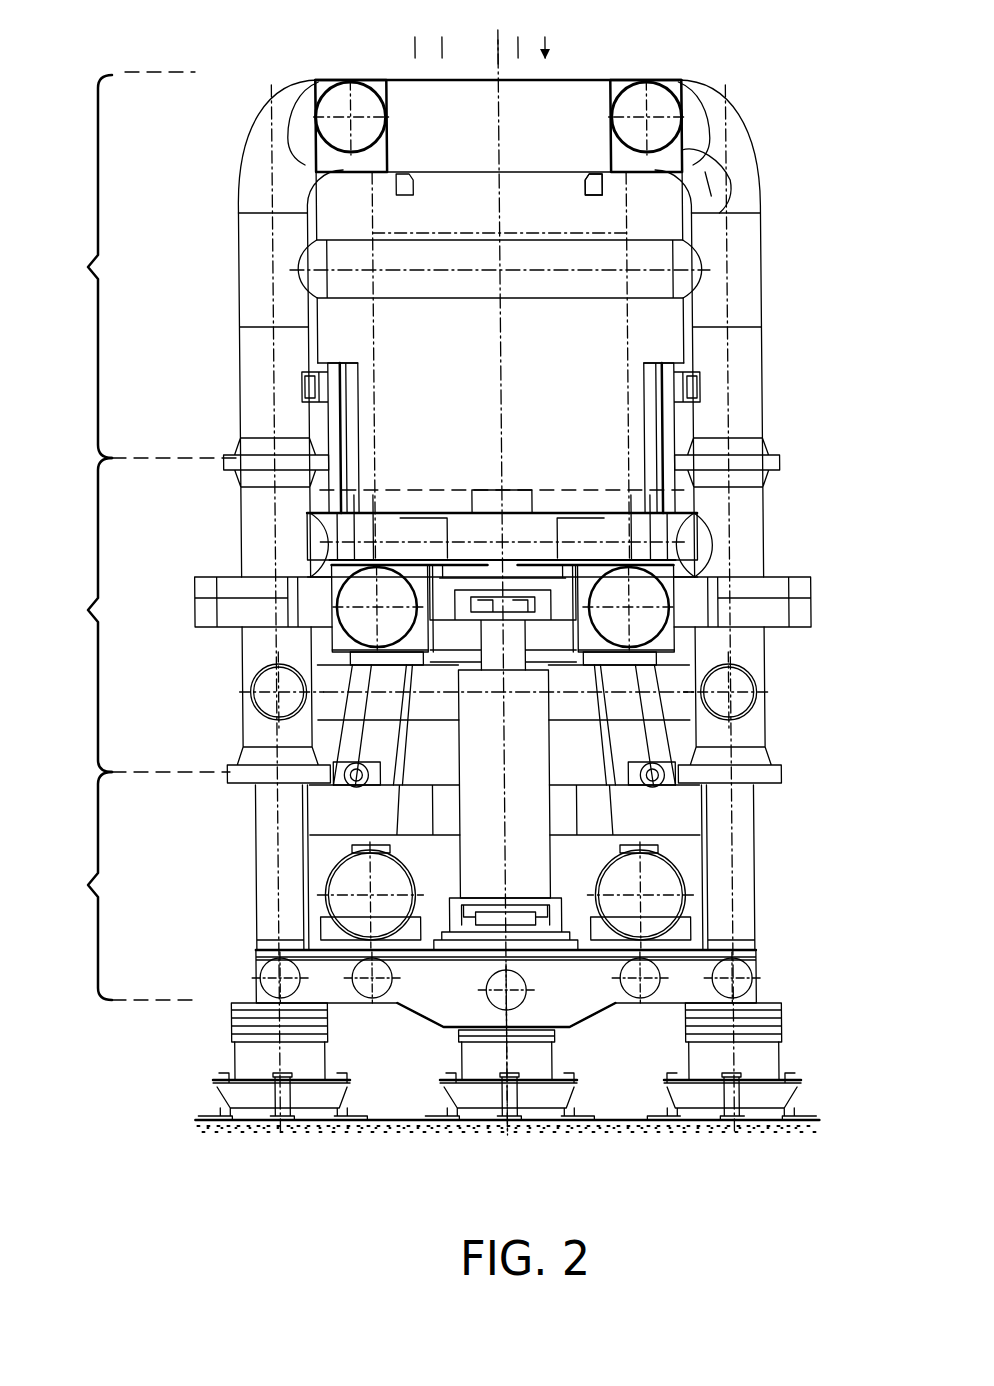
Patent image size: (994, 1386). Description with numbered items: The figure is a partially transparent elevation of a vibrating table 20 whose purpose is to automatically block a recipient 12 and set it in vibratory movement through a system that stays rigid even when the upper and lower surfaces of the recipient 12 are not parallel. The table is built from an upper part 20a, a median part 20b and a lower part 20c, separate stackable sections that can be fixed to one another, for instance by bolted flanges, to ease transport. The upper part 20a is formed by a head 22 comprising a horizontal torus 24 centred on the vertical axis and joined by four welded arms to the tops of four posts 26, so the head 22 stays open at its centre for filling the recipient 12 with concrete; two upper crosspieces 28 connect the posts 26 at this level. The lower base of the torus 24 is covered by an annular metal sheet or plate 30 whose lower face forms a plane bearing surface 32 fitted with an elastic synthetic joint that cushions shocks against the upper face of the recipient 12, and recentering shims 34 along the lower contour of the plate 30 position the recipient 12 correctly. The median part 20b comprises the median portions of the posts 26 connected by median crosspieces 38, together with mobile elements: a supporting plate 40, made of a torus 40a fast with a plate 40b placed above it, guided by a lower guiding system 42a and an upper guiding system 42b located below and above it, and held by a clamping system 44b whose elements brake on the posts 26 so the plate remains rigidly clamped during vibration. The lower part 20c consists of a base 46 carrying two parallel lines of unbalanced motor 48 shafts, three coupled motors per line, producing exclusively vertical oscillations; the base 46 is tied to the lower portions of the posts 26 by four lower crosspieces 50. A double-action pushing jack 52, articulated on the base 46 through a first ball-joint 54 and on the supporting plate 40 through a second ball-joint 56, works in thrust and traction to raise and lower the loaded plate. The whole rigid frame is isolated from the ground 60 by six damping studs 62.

The recipient 12 is at (512, 384).
The vibrating table 20 is at (203, 692).
The upper part 20a is at (136, 265).
The median part 20b is at (132, 615).
The lower part 20c is at (117, 886).
The head 22 is at (570, 78).
The horizontal torus 24 is at (668, 150).
The posts 26 is at (745, 355).
The upper crosspieces 28 is at (620, 262).
The metal sheet / plate 30 is at (700, 185).
The bearing surface 32 is at (302, 210).
The recentering shims 34 is at (605, 190).
The median crosspieces 38 is at (173, 593).
The supporting plate 40 is at (688, 634).
The torus 40a is at (665, 545).
The plate 40b is at (305, 515).
The lower guiding system 42a is at (355, 777).
The upper guiding system 42b is at (330, 402).
The clamping system 44b is at (722, 588).
The base 46 is at (760, 970).
The unbalanced motor 48 is at (692, 877).
The lower crosspieces 50 is at (342, 820).
The pushing jack 52 is at (540, 775).
The first ball-joint 54 is at (503, 920).
The second ball-joint 56 is at (512, 600).
The ground 60 is at (690, 1125).
The damping studs 62 is at (778, 1058).